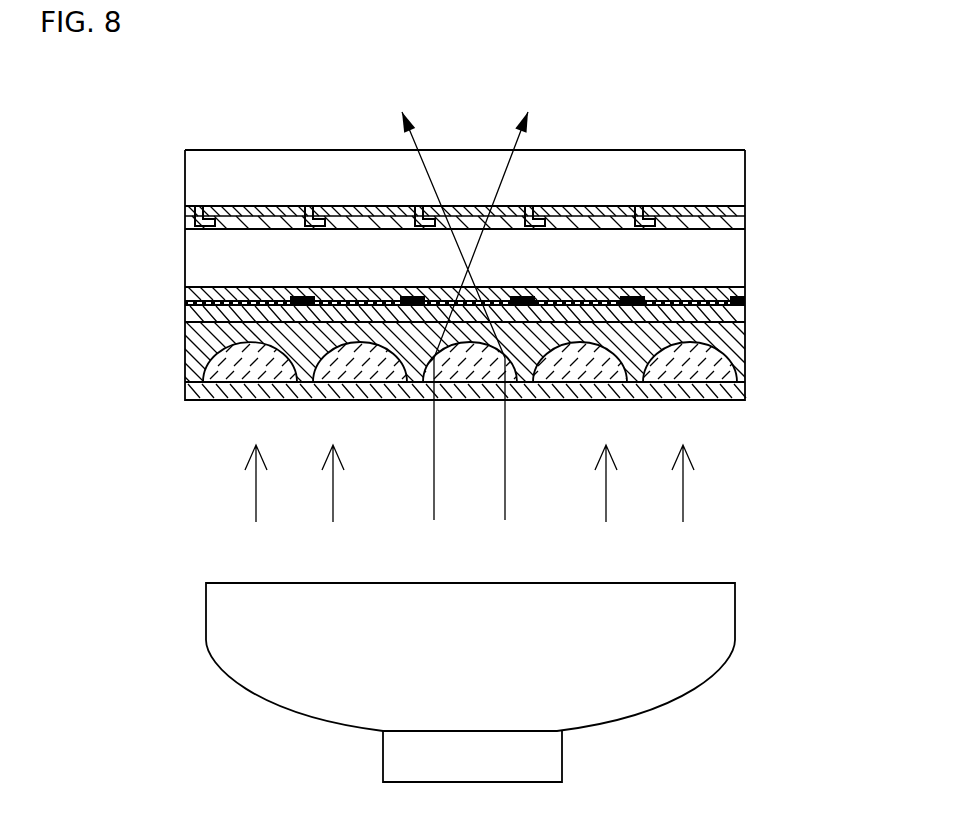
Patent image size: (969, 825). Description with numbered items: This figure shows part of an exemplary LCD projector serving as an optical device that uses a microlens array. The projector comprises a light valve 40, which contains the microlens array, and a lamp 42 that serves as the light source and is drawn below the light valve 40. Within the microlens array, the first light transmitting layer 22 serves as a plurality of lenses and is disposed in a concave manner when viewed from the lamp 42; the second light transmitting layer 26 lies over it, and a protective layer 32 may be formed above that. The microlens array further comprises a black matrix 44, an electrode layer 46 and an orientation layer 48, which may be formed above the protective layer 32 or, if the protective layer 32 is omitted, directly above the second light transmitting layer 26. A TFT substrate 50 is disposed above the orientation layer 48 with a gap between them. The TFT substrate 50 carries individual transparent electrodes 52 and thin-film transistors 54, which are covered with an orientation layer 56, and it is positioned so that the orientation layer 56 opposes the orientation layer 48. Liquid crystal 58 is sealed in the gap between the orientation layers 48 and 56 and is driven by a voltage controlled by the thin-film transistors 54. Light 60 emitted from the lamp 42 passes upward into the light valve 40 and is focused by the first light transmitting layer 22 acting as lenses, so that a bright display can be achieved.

The light valve 40 is at (152, 258).
The TFT substrate 50 is at (716, 165).
The transparent electrodes 52 is at (678, 208).
The thin-film transistors 54 is at (637, 207).
The orientation layer 56 is at (748, 212).
The liquid crystal 58 is at (728, 243).
The orientation layer 48 is at (742, 268).
The electrode layer 46 is at (748, 297).
The black matrix 44 is at (748, 305).
The protective layer 32 is at (748, 316).
The second light transmitting layer 26 is at (748, 345).
The first light transmitting layer 22 is at (748, 371).
The light 60 is at (507, 497).
The lamp 42 is at (226, 622).